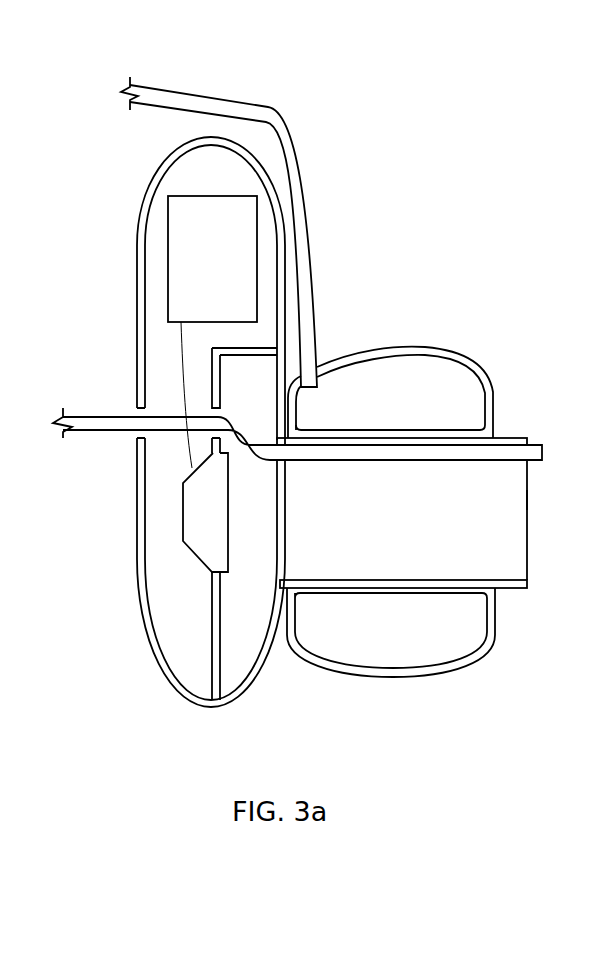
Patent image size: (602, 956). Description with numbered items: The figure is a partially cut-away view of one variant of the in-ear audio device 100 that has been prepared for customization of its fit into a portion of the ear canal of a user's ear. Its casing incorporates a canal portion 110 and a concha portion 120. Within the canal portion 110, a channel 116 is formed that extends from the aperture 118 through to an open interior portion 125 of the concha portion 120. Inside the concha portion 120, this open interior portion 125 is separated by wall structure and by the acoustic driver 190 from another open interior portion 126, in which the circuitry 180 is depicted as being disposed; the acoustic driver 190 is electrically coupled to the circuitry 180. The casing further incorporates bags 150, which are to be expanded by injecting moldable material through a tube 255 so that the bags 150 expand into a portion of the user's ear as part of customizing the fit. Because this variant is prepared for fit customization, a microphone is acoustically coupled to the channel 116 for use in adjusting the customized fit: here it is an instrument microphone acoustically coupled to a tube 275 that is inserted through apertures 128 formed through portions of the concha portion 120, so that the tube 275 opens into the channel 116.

The in-ear audio device 100 is at (486, 99).
The canal portion 110 is at (510, 437).
The channel 116 is at (375, 523).
The aperture 118 is at (543, 498).
The concha portion 120 is at (138, 258).
The open interior portion 125 is at (232, 613).
The open interior portion 126 is at (166, 613).
The apertures 128 is at (116, 423).
The bag 150 is at (400, 346).
The circuitry 180 is at (230, 269).
The acoustic driver 190 is at (190, 523).
The tube 255 is at (152, 106).
The tube 275 is at (110, 417).